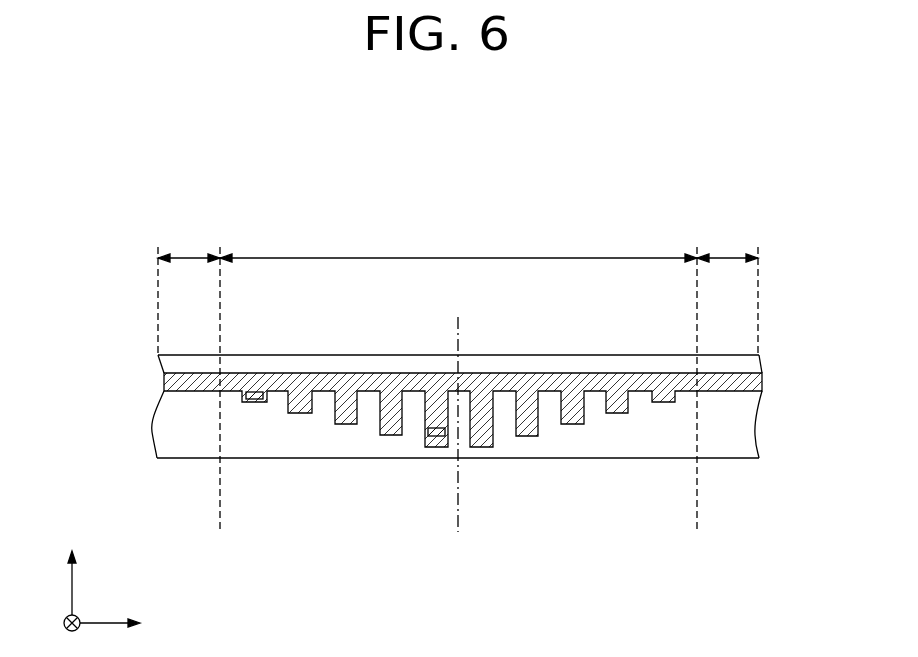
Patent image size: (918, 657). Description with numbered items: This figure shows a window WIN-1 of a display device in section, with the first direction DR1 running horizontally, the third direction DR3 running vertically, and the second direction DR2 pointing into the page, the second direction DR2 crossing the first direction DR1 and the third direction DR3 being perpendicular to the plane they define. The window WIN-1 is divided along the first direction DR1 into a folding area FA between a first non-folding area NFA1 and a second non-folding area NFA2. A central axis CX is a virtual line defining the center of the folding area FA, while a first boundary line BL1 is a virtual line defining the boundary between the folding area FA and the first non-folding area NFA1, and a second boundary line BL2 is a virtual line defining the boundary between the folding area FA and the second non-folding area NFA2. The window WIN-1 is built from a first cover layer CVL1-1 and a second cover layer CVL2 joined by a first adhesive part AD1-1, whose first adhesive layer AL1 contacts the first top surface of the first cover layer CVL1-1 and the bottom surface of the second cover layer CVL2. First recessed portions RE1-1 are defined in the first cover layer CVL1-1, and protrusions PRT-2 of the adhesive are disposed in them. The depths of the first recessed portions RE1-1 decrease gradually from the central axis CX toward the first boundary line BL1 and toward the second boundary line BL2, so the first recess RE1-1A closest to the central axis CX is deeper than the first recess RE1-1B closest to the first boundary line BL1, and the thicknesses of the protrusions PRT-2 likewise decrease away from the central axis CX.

The window WIN-1 is at (660, 191).
The second cover layer CVL2 is at (745, 364).
The first adhesive part AD1-1 is at (745, 383).
The first cover layer CVL1-1 is at (745, 421).
The first adhesive layer AL1 is at (166, 381).
The protrusions PRT-2 is at (388, 406).
The first recess RE1-1B is at (254, 398).
The first recess RE1-1A is at (433, 434).
The first recessed portions RE1-1 is at (432, 522).
The central axis CX is at (457, 438).
The first boundary line BL1 is at (218, 403).
The second boundary line BL2 is at (695, 403).
The first non-folding area NFA1 is at (189, 289).
The folding area FA is at (458, 243).
The second non-folding area NFA2 is at (727, 289).
The first direction DR1 is at (130, 625).
The second direction DR2 is at (72, 636).
The third direction DR3 is at (72, 570).